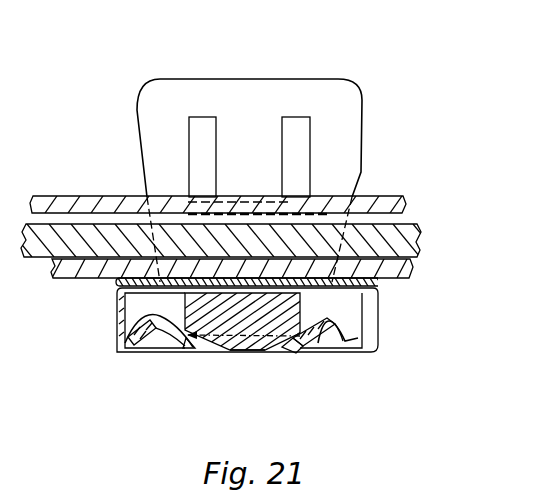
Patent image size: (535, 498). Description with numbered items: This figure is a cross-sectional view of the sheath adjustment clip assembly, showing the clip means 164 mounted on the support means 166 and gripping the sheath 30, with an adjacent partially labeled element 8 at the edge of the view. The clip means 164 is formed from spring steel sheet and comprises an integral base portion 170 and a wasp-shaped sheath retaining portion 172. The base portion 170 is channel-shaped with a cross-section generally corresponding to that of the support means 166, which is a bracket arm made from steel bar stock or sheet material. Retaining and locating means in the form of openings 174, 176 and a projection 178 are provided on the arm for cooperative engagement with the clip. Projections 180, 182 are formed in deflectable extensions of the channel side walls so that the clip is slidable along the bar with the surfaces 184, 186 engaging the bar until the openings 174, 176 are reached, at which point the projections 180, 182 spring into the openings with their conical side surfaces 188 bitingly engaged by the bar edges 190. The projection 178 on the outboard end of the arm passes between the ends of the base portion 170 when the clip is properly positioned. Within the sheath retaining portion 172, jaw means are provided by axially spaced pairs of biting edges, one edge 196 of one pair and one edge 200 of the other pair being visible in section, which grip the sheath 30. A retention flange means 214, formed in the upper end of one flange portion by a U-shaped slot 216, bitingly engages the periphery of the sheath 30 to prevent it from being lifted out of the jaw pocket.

The circuit board 8 is at (20, 243).
The sheath 30 is at (74, 190).
The clip means 164 is at (262, 119).
The support means 166 is at (242, 364).
The base portion 170 is at (239, 332).
The sheath retaining portion 172 is at (143, 84).
The opening 174 is at (140, 306).
The opening 176 is at (349, 313).
The projection 178 is at (242, 339).
The projection 180 is at (156, 340).
The projection 182 is at (341, 340).
The surface 184 is at (130, 345).
The surface 186 is at (327, 324).
The conical side surface 188 is at (181, 323).
The bar edge 190 is at (276, 343).
The biting edge 196 is at (139, 210).
The biting edge 200 is at (357, 207).
The retention flange means 214 is at (211, 135).
The U-shaped slot 216 is at (297, 137).